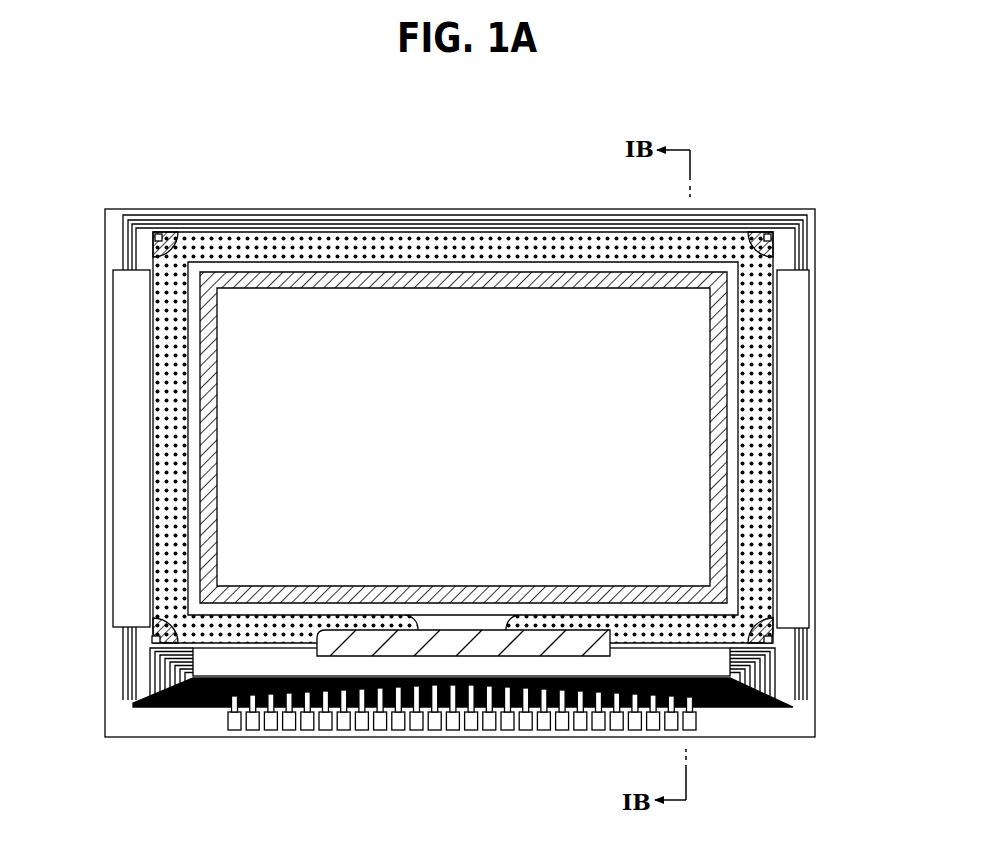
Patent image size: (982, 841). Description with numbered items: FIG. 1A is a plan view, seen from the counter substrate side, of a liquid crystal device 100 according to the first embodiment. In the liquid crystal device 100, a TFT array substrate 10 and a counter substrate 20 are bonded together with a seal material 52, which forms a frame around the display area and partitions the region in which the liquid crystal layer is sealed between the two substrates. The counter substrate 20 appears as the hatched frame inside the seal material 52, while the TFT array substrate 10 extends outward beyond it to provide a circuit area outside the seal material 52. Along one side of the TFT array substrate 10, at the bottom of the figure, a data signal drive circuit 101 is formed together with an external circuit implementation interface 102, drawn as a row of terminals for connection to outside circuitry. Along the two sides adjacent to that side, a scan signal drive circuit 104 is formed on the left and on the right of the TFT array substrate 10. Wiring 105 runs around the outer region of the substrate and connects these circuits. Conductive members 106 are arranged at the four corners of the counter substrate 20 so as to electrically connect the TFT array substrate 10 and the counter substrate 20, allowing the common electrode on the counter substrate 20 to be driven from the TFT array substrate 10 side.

The liquid crystal device 100 is at (795, 178).
The TFT array substrate 10 is at (470, 210).
The counter substrate 20 is at (568, 262).
The seal material 52 is at (750, 386).
The scan signal drive circuit 104 is at (127, 444).
The wiring 105 is at (337, 215).
The conductive member 106 is at (160, 238).
The data signal drive circuit 101 is at (240, 662).
The external circuit implementation interface 102 is at (372, 732).